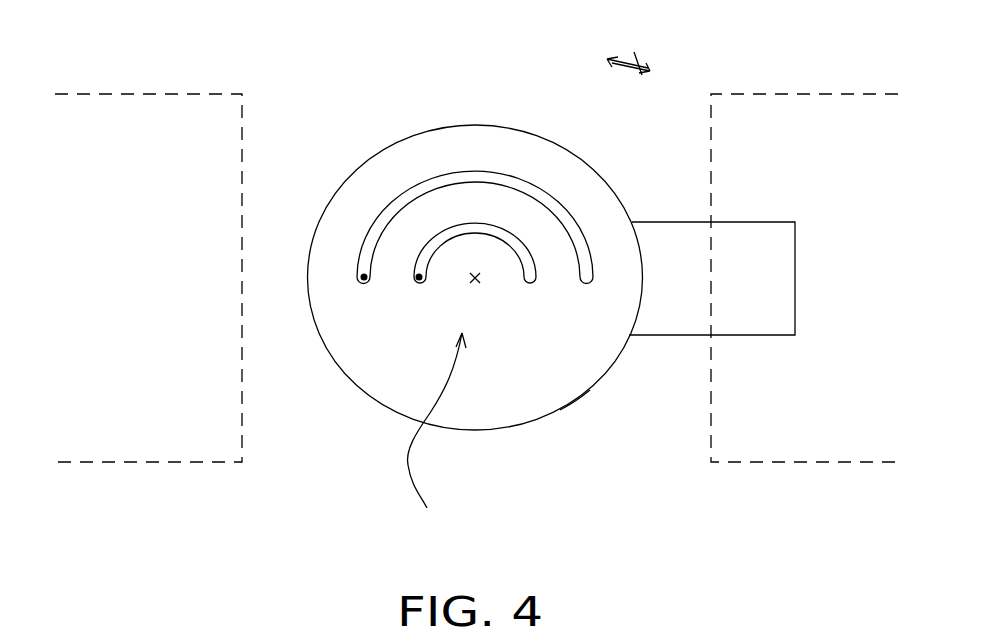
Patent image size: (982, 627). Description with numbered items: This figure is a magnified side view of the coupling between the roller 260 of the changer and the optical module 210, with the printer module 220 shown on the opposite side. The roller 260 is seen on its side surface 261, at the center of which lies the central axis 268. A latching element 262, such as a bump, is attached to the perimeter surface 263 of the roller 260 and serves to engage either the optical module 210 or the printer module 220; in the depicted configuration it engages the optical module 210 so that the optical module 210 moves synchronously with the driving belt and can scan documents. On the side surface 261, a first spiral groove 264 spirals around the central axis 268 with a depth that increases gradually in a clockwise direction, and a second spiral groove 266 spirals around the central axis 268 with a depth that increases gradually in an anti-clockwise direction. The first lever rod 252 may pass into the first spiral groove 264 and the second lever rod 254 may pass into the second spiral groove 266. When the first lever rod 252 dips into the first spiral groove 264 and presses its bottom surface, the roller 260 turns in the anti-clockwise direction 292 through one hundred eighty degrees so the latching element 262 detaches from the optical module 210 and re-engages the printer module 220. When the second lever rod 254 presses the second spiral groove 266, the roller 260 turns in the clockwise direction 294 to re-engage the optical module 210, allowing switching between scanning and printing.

The optical module 210 is at (789, 102).
The printer module 220 is at (192, 102).
The roller 260 is at (449, 135).
The side surface 261 is at (434, 435).
The latching element 262 is at (666, 230).
The perimeter surface 263 is at (608, 372).
The first spiral groove 264 is at (531, 283).
The second spiral groove 266 is at (545, 195).
The central axis 268 is at (478, 284).
The first lever rod 252 is at (420, 281).
The second lever rod 254 is at (364, 281).
The anti-clockwise direction 292 is at (627, 74).
The clockwise direction 294 is at (628, 56).